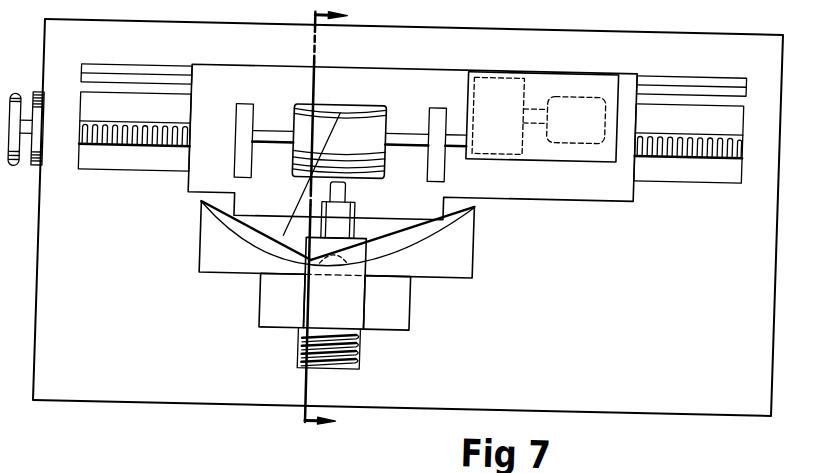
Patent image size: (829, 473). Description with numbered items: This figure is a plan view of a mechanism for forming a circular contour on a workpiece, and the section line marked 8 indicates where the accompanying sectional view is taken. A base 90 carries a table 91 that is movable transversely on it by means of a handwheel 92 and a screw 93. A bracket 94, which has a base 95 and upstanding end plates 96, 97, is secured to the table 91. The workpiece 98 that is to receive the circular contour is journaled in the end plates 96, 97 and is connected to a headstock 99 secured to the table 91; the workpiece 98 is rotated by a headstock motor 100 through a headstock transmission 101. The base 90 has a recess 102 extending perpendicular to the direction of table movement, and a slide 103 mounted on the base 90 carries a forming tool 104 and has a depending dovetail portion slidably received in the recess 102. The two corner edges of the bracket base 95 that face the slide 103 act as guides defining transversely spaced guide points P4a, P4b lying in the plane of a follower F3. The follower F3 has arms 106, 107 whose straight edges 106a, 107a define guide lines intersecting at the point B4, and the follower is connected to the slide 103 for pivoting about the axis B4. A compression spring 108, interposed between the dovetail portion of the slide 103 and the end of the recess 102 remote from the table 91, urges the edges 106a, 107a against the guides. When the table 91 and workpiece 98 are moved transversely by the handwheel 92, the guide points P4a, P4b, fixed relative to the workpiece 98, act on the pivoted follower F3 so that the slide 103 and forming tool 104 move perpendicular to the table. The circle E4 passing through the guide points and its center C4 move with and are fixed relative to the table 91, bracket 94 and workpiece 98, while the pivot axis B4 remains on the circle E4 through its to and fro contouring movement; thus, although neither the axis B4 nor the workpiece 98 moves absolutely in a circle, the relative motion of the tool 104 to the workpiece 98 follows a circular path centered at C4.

The base 90 is at (684, 344).
The table 91 is at (590, 188).
The handwheel 92 is at (18, 167).
The screw 93 is at (147, 140).
The bracket 94 is at (259, 94).
The bracket base 95 is at (421, 99).
The end plate 96 is at (240, 161).
The end plate 97 is at (450, 159).
The workpiece 98 is at (330, 95).
The headstock 99 is at (542, 150).
The headstock motor 100 is at (573, 86).
The headstock transmission 101 is at (498, 68).
The recess 102 is at (380, 344).
The slide 103 is at (419, 308).
The forming tool 104 is at (351, 186).
The follower arm 106 is at (268, 269).
The straight edge 106a is at (288, 196).
The follower arm 107 is at (447, 269).
The straight edge 107a is at (419, 224).
The compression spring 108 is at (370, 361).
The section line 8- 8 is at (311, 217).
The center C4 is at (336, 122).
The circle E4 is at (302, 253).
The follower F3 is at (481, 255).
The guide point P4a is at (243, 214).
The guide point P4b is at (471, 235).
The pivot axis B4 is at (349, 252).